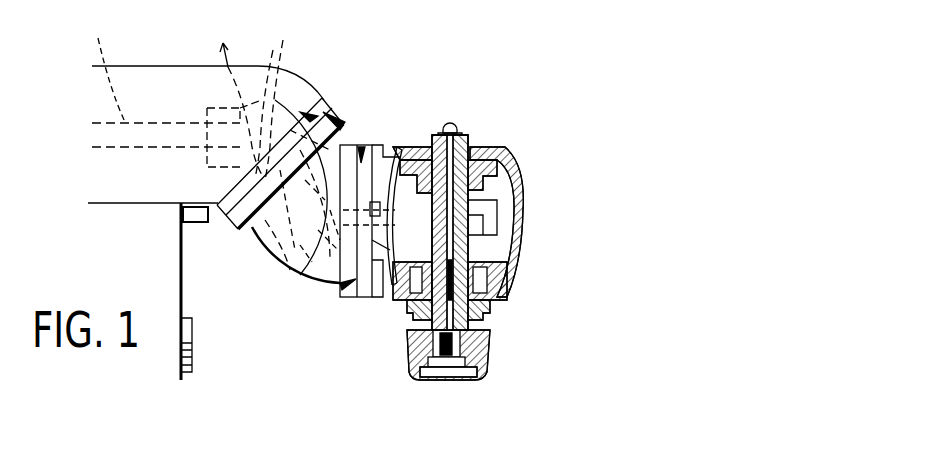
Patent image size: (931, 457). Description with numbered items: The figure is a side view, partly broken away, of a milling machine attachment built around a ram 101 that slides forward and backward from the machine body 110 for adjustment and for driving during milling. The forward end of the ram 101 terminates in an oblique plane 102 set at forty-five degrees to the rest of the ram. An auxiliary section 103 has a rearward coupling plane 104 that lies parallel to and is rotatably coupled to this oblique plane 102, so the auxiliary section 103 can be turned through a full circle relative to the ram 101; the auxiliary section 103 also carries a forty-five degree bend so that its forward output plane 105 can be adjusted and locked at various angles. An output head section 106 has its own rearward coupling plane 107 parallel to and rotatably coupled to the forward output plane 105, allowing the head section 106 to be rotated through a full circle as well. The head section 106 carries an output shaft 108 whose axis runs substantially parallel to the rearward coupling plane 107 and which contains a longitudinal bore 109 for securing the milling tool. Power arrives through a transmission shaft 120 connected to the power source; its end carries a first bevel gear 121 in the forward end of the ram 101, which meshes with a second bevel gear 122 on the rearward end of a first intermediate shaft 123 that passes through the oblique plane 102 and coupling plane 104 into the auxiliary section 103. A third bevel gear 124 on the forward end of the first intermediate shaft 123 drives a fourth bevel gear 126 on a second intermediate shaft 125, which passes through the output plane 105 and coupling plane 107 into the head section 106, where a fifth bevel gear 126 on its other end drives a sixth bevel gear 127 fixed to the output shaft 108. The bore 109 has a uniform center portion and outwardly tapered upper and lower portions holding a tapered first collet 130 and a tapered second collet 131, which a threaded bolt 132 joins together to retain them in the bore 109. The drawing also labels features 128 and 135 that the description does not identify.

The ram 101 is at (147, 80).
The oblique plane 102 is at (342, 110).
The auxiliary section 103 is at (260, 228).
The rearward coupling plane 104 is at (292, 95).
The forward output plane 105 is at (364, 147).
The output head section 106 is at (497, 283).
The rearward coupling plane 107 is at (352, 298).
The output shaft 108 is at (510, 240).
The longitudinal bore 109 is at (465, 125).
The machine body 110 is at (165, 298).
The transmission shaft 120 is at (95, 68).
The first bevel gear 121 is at (233, 94).
The second bevel gear 122 is at (278, 96).
The first intermediate shaft 123 is at (280, 251).
The third bevel gear 124 is at (290, 281).
The second intermediate shaft 125 is at (374, 300).
The fourth bevel gear 126 is at (330, 279).
The sixth bevel gear 127 is at (388, 175).
The bearing 128 is at (420, 150).
The first collet 130 is at (470, 137).
The second collet 131 is at (482, 322).
The threaded bolt 132 is at (482, 215).
The base plate 135 is at (490, 375).